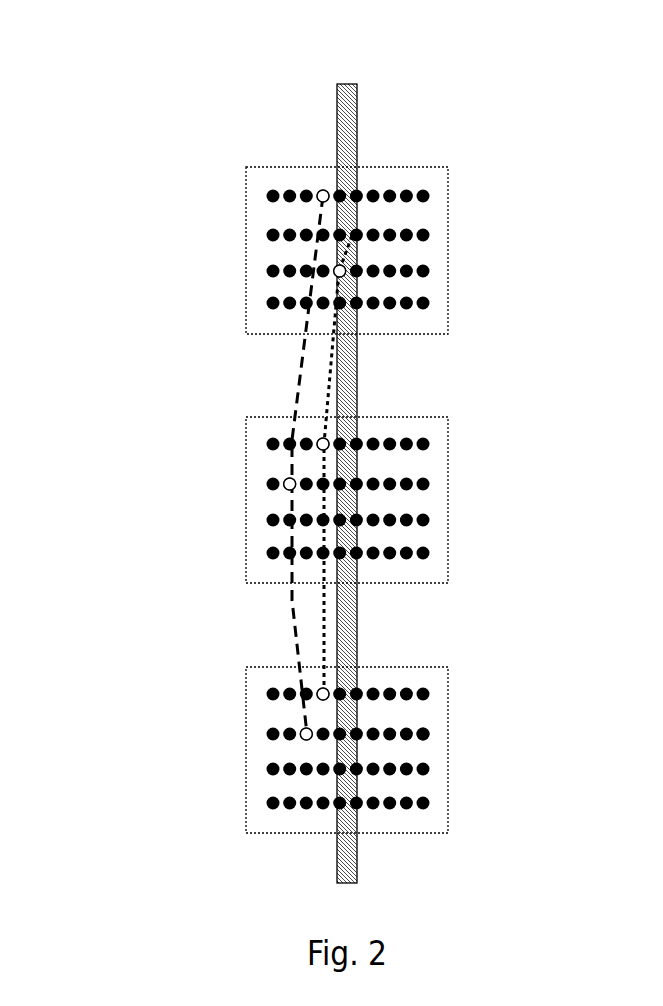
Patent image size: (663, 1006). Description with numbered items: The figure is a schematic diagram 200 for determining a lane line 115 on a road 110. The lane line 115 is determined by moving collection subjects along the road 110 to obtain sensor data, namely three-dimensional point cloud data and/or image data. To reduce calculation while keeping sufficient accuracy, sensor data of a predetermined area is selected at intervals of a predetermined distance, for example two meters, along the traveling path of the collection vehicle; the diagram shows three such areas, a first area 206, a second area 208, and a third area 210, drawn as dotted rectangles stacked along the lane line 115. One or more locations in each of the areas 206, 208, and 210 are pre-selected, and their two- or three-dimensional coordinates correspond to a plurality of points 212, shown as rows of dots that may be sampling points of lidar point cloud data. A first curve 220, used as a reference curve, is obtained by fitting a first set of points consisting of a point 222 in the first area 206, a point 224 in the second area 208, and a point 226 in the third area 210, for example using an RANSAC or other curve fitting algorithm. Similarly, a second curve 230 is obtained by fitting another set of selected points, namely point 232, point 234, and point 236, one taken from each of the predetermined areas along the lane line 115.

The schematic diagram 200 is at (116, 52).
The road 110 is at (210, 108).
The lane line 115 is at (353, 83).
The first area 206 is at (423, 167).
The second area 208 is at (424, 417).
The third area 210 is at (424, 667).
The points 212 is at (426, 731).
The first curve 220 is at (293, 378).
The point in the first area 222 is at (320, 190).
The point in the second area 224 is at (285, 480).
The point in the third area 226 is at (302, 730).
The second curve 230 is at (324, 410).
The selected point 232 is at (343, 278).
The selected point 234 is at (328, 438).
The selected point 236 is at (328, 689).